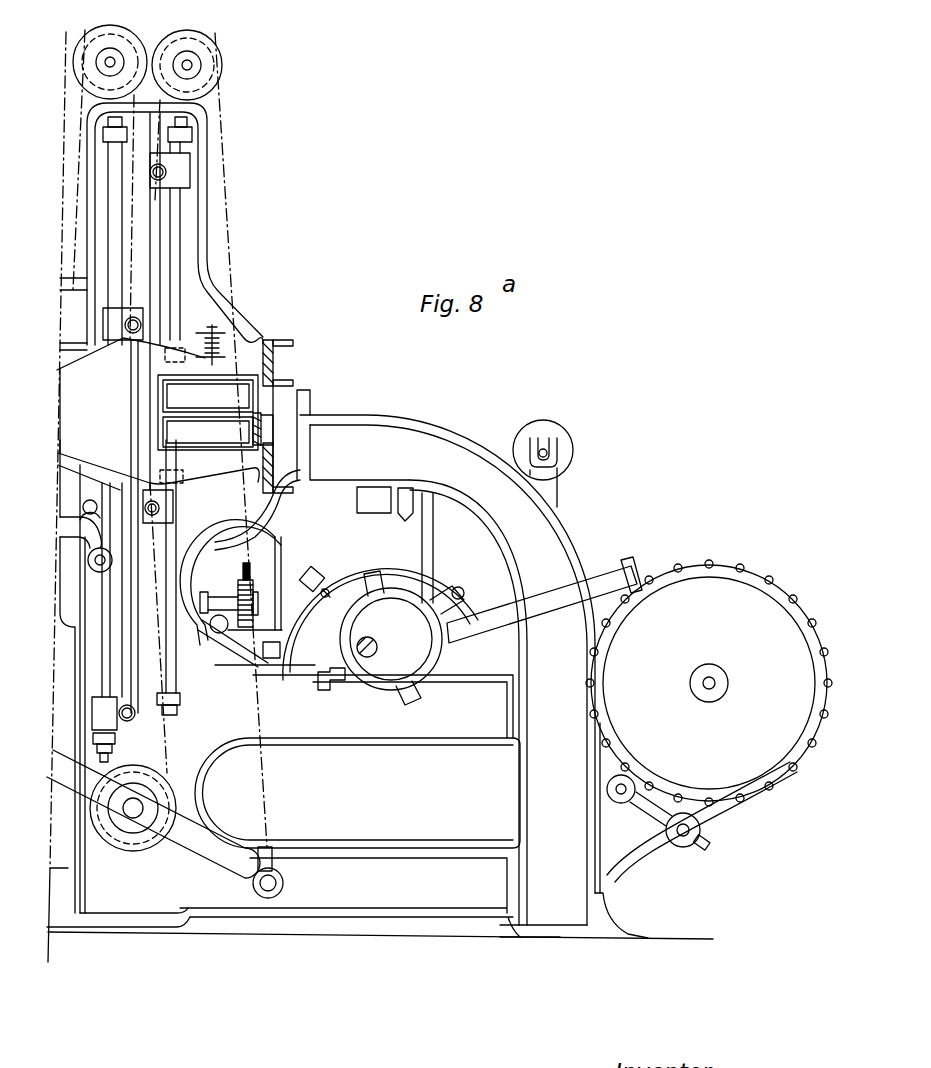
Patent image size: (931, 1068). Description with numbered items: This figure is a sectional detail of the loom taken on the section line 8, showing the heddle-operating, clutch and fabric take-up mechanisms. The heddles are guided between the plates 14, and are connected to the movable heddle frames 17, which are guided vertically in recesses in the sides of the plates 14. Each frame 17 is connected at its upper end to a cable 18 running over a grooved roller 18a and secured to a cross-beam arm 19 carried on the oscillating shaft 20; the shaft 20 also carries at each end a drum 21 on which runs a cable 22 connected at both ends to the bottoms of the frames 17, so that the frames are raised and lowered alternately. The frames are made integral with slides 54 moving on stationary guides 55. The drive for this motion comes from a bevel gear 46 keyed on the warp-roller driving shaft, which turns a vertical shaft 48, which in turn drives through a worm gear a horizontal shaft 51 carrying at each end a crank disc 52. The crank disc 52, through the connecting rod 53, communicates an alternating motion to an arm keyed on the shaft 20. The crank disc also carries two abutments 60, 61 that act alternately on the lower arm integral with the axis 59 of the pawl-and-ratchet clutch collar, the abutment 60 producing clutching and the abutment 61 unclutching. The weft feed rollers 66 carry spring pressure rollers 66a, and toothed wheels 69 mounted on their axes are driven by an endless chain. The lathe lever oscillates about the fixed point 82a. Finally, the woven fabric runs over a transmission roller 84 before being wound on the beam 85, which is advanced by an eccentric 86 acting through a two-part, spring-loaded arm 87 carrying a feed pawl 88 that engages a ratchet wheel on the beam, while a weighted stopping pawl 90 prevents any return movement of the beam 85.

The sectional view line 8 is at (56, 503).
The plates 14 is at (158, 414).
The heddle frame 17 is at (158, 240).
The cable 18 is at (228, 268).
The grooved roller 18a is at (123, 36).
The cross-beam arm 19 is at (187, 843).
The oscillating shaft 20 is at (130, 817).
The drum 21 is at (140, 837).
The cable 22 is at (166, 745).
The bevel gear 46 is at (408, 521).
The vertical shaft 48 is at (433, 560).
The horizontal shaft 51 is at (377, 648).
The crank disc 52 is at (374, 523).
The connecting rod 53 is at (242, 633).
The slide 54 is at (180, 167).
The stationary guide 55 is at (117, 177).
The axis 59 is at (273, 563).
The abutment 60 is at (322, 572).
The abutment 61 is at (464, 590).
The weft feed roller 66 is at (208, 412).
The spring pressure roller 66a is at (208, 395).
The toothed wheel 69 is at (258, 415).
The fixed point 82a is at (106, 563).
The transmission roller 84 is at (560, 467).
The beam 85 is at (709, 683).
The eccentric 86 is at (422, 683).
The arm 87 is at (552, 608).
The feed pawl 88 is at (698, 561).
The weighted stopping pawl 90 is at (618, 770).